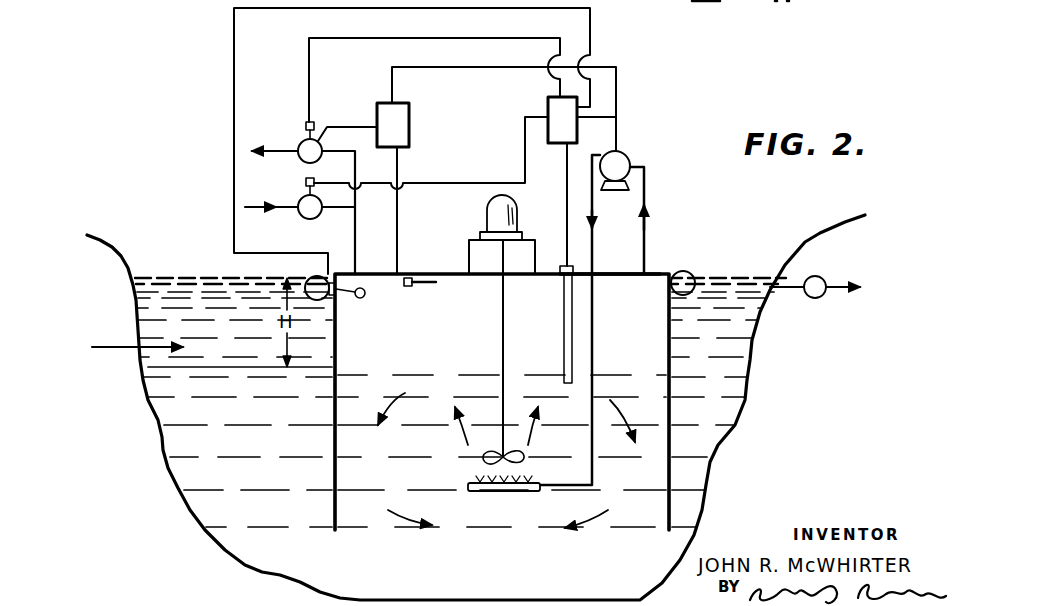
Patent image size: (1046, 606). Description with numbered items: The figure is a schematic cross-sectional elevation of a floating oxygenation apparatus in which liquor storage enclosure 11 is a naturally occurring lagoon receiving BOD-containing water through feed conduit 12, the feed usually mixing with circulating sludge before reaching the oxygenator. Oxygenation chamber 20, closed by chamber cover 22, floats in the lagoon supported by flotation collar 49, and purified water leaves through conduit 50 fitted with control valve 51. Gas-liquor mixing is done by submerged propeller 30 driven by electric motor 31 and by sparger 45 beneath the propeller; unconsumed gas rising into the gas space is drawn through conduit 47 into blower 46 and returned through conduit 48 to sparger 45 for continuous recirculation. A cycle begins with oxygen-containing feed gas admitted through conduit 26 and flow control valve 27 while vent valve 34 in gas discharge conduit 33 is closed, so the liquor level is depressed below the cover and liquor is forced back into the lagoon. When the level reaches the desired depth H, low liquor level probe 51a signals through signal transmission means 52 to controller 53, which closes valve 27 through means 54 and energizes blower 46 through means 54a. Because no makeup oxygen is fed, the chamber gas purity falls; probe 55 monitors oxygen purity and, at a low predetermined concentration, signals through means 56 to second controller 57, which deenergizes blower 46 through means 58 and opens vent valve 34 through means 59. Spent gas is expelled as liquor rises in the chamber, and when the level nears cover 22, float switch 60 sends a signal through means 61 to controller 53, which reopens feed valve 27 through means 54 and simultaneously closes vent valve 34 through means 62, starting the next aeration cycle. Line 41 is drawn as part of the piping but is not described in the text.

The liquor storage enclosure 11 is at (160, 452).
The BOD-containing water feed conduit 12 is at (120, 348).
The oxygenation chamber 20 is at (670, 426).
The chamber cover 22 is at (640, 270).
The conduit 26 is at (306, 200).
The flow control valve 27 is at (300, 220).
The submerged propeller 30 is at (524, 458).
The electric motor 31 is at (488, 215).
The gas discharge conduit 33 is at (272, 156).
The vent valve 34 is at (302, 142).
The gas supply line 41 is at (334, 268).
The sparger 45 is at (492, 493).
The compressor or blower 46 is at (629, 158).
The conduit 47 is at (646, 182).
The conduit 48 is at (612, 246).
The flotation collar 49 is at (314, 276).
The conduit 50 is at (792, 290).
The control valve 51 is at (822, 277).
The probe 51a is at (562, 338).
The signal transmission means 52 is at (566, 226).
The controller 53 is at (548, 114).
The signal transmission means 54 is at (434, 181).
The signal transmission means 54a is at (620, 116).
The probe 55 is at (430, 284).
The signal transmission means 56 is at (398, 232).
The second controller 57 is at (409, 114).
The signal transmission means 58 is at (620, 90).
The signal transmission means 59 is at (352, 122).
The float switch 60 is at (362, 298).
The signal transmission means 61 is at (234, 42).
The signal transmission means 62 is at (308, 66).